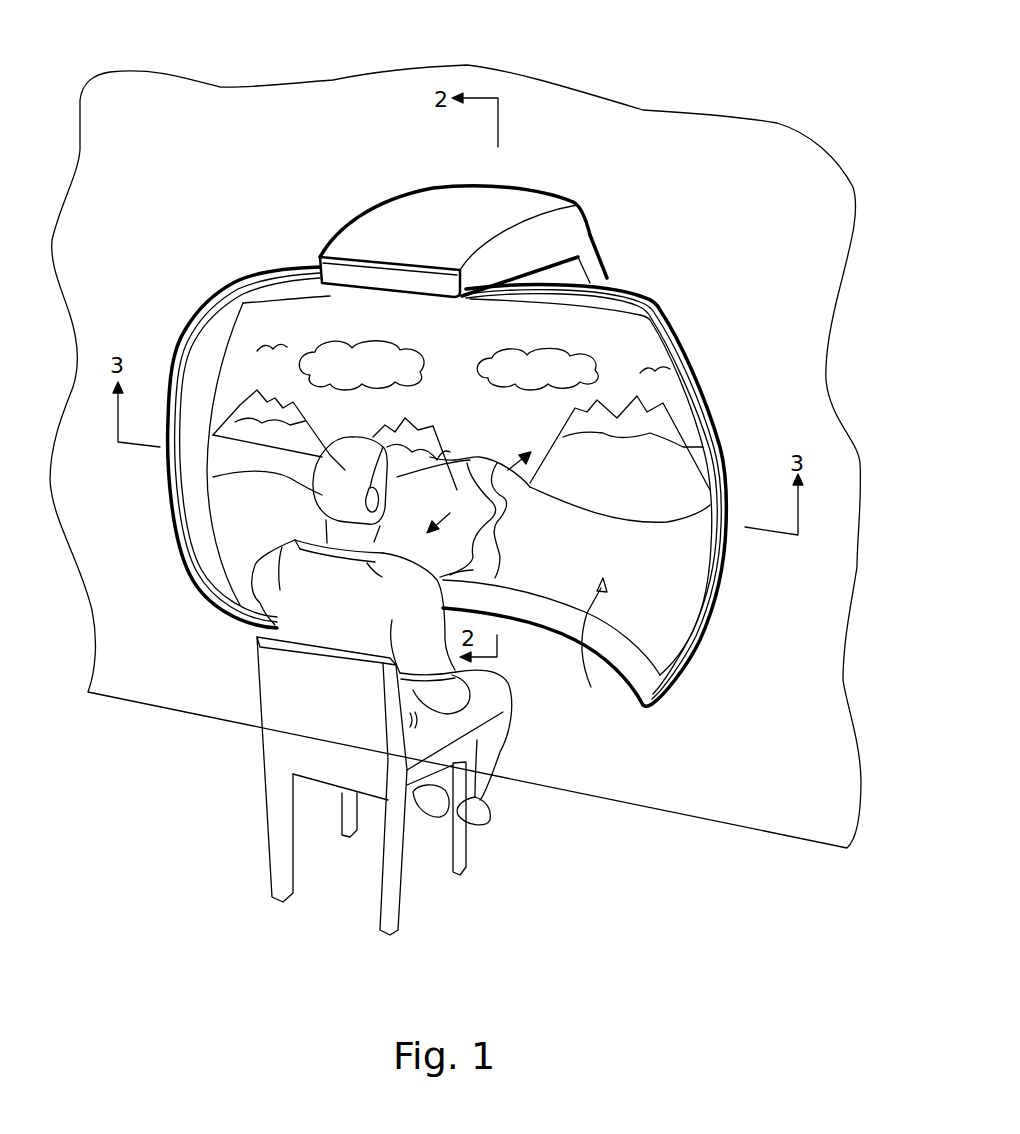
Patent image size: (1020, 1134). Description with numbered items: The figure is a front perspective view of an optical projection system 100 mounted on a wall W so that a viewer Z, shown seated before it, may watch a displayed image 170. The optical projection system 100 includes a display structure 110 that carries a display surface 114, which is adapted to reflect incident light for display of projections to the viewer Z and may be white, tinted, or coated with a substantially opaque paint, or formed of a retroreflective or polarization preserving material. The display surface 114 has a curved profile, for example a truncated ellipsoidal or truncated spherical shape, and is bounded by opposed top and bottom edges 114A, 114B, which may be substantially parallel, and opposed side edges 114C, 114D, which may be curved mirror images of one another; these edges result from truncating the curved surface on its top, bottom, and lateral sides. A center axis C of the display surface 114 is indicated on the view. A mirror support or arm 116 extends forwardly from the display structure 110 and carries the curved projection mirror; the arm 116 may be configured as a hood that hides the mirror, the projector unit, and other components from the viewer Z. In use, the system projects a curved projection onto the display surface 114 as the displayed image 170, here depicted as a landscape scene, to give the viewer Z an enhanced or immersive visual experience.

The optical projection system 100 is at (643, 90).
The display structure 110 is at (705, 338).
The display surface 114 is at (452, 497).
The top edge 114A is at (215, 532).
The bottom edge 114B is at (674, 648).
The side edge 114C is at (650, 318).
The side edge 114D is at (557, 595).
The mirror support arm 116 is at (492, 207).
The displayed image 170 is at (598, 649).
The wall W is at (330, 103).
The viewer Z is at (300, 582).
The center axis C is at (473, 480).